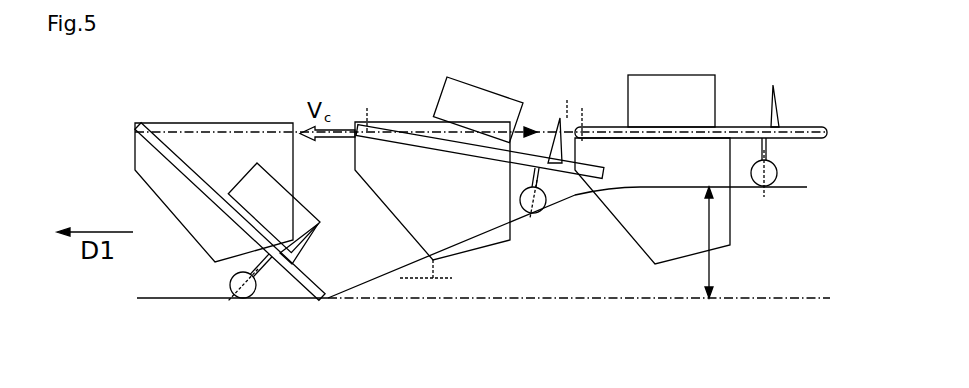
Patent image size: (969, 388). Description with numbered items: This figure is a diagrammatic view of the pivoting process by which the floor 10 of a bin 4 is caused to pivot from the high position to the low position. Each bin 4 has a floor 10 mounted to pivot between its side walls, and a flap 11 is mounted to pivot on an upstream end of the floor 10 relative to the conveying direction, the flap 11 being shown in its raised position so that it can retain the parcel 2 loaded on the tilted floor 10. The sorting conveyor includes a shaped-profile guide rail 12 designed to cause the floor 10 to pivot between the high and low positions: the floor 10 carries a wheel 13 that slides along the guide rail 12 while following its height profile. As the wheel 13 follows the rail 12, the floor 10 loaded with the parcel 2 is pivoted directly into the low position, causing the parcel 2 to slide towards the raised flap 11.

The parcel 2 is at (258, 178).
The bin 4 is at (215, 143).
The floor 10 is at (200, 195).
The flap 11 is at (303, 247).
The guide rail 12 is at (795, 190).
The wheel 13 is at (232, 288).